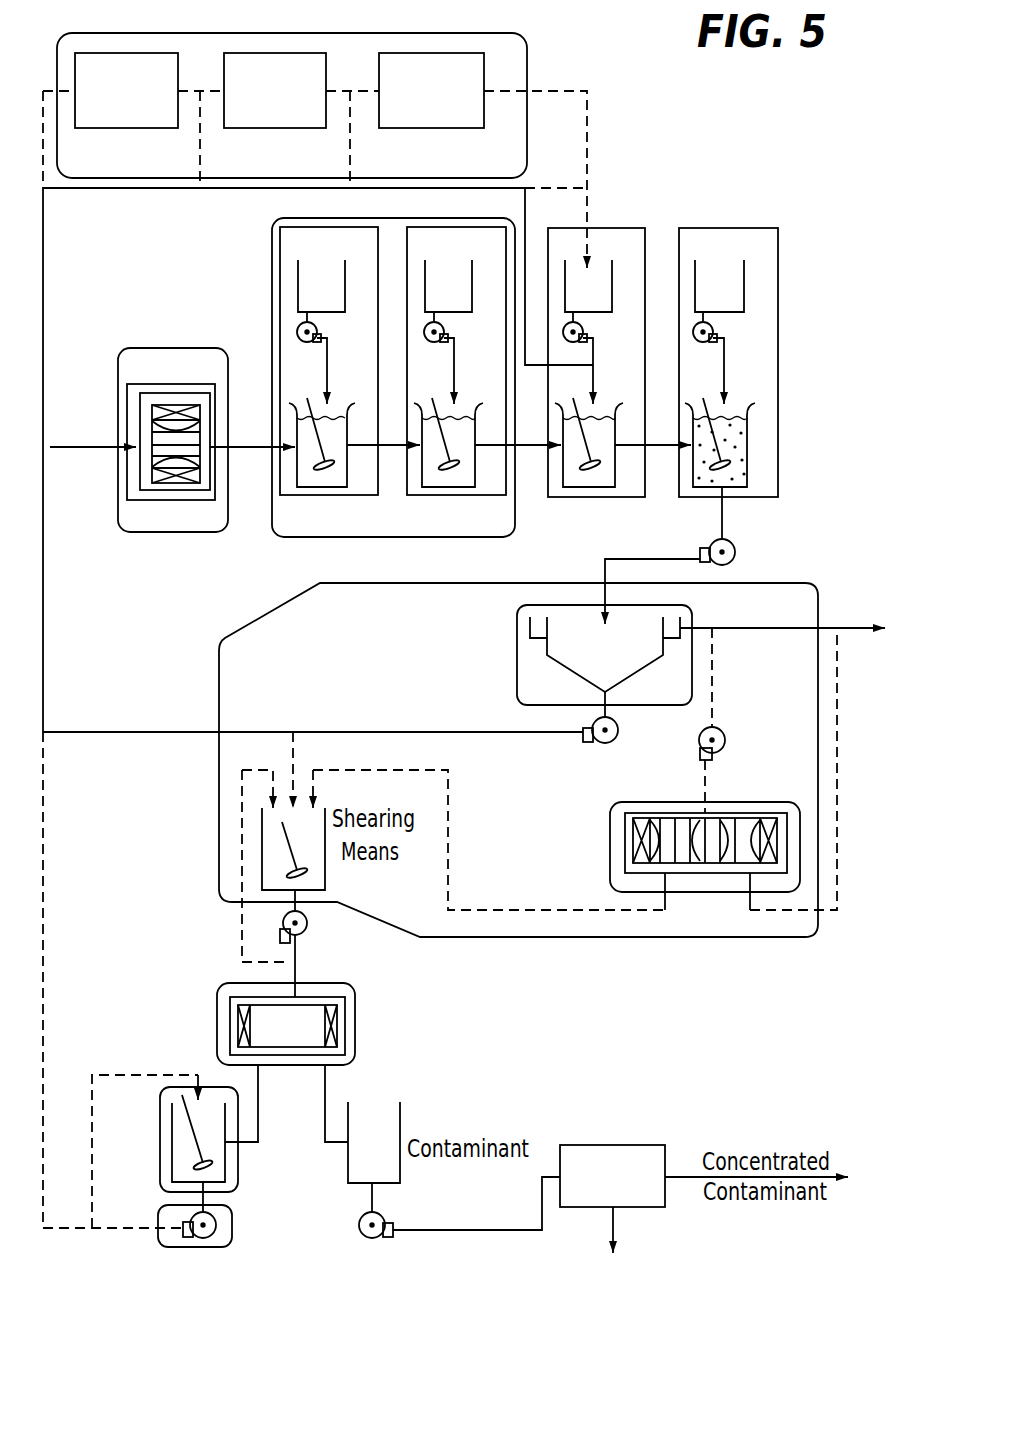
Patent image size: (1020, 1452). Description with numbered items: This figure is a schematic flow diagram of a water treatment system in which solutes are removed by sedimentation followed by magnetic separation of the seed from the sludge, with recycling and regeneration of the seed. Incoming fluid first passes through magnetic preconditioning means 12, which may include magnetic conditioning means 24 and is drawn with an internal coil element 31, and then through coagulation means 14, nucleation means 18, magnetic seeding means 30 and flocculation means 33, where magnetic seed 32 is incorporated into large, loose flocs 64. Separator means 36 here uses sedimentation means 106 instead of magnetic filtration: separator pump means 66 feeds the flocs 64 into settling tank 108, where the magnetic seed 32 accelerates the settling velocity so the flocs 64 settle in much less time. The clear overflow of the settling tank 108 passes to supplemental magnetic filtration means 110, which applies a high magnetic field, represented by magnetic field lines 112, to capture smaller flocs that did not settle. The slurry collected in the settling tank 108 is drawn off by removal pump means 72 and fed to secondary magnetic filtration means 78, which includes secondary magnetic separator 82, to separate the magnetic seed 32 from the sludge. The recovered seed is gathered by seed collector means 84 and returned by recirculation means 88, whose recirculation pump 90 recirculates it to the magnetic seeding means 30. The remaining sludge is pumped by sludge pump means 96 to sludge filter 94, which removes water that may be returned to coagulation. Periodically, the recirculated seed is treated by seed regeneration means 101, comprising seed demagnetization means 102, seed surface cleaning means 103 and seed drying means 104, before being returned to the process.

The periodic seed regeneration means 101 is at (310, 33).
The seed demagnetization means 102 is at (198, 64).
The seed surface cleaning means 103 is at (347, 64).
The seed drying means 104 is at (505, 64).
The magnetic preconditioning means 12 is at (125, 350).
The magnetic conditioning means 24 is at (163, 384).
The magnet coil 31 is at (180, 491).
The coagulation means 14 is at (273, 233).
The nucleation means 18 is at (472, 218).
The magnetic seed 32 is at (600, 228).
The magnetic seeding means 30 is at (647, 312).
The flocculation means 33 is at (733, 227).
The flocs 64 is at (738, 437).
The separator pump means 66 is at (735, 553).
The sedimentation means 106 is at (515, 612).
The settling tank 108 is at (515, 649).
The separator means 36 is at (217, 665).
The removal pump means 72 is at (618, 722).
The supplemental magnetic filtration means 110 is at (675, 802).
The magnetic field lines 112 is at (717, 837).
The secondary magnetic filtration means 78 is at (357, 992).
The secondary magnetic separator 82 is at (230, 1024).
The seed collector means 84 is at (238, 1160).
The recirculation means 88 is at (160, 1239).
The recirculation pump 90 is at (190, 1220).
The sludge filter 94 is at (593, 1145).
The sludge pump means 96 is at (380, 1215).